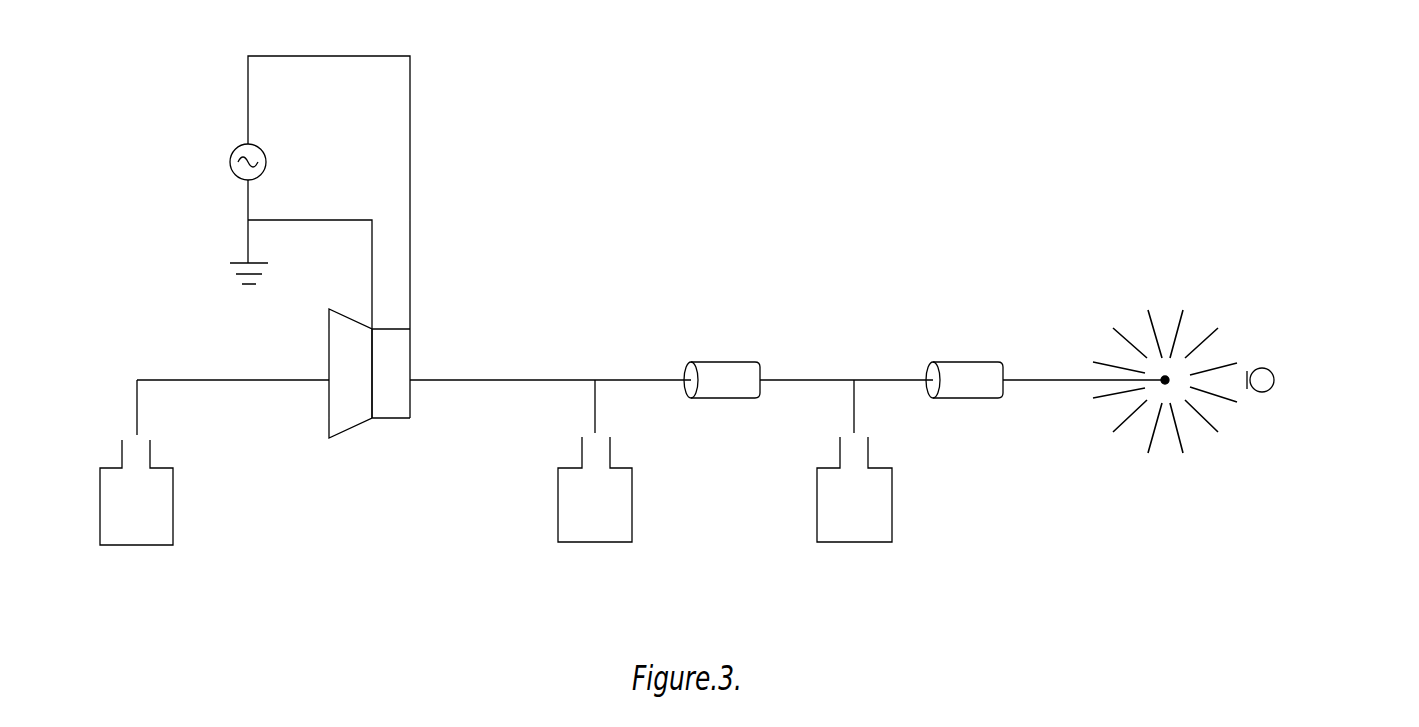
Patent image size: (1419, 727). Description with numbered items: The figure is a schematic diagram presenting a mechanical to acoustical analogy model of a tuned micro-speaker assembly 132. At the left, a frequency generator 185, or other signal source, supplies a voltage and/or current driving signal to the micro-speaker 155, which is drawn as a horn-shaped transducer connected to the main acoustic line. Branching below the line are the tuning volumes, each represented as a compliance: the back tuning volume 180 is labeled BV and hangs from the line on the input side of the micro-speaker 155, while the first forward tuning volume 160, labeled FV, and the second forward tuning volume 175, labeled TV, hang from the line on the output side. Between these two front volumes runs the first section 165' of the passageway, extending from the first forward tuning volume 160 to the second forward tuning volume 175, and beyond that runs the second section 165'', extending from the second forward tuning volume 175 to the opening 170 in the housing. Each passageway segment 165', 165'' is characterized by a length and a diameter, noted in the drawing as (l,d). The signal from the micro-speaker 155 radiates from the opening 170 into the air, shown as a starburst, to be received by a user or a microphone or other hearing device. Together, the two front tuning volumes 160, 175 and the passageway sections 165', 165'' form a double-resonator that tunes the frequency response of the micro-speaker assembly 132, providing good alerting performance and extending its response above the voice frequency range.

The micro-speaker assembly 132 is at (806, 180).
The frequency generator 185 is at (193, 155).
The micro-speaker 155 is at (311, 405).
The back tuning volume 180 is at (173, 515).
The first forward tuning volume 160 is at (558, 528).
The second forward tuning volume 175 is at (892, 525).
The first section of passageway 165' is at (722, 411).
The second section of passageway 165'' is at (974, 414).
The opening 170 is at (1162, 358).